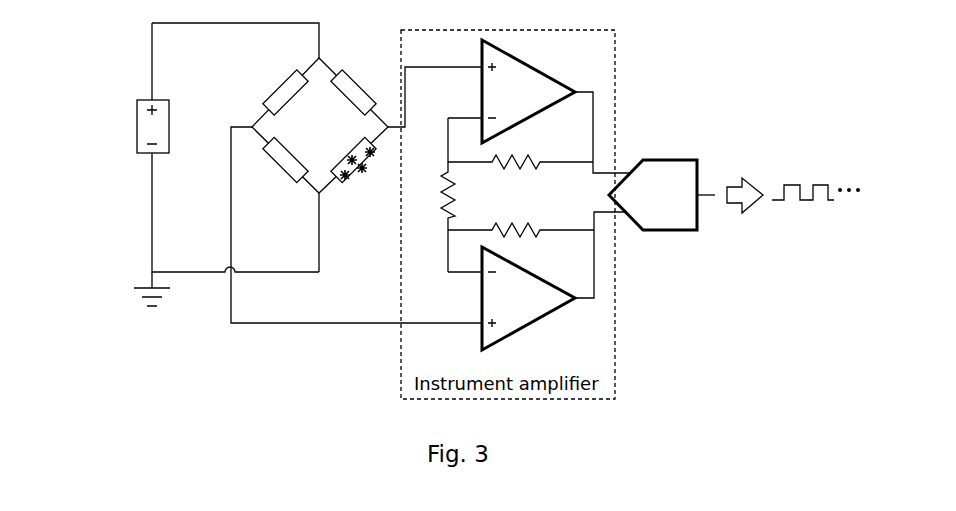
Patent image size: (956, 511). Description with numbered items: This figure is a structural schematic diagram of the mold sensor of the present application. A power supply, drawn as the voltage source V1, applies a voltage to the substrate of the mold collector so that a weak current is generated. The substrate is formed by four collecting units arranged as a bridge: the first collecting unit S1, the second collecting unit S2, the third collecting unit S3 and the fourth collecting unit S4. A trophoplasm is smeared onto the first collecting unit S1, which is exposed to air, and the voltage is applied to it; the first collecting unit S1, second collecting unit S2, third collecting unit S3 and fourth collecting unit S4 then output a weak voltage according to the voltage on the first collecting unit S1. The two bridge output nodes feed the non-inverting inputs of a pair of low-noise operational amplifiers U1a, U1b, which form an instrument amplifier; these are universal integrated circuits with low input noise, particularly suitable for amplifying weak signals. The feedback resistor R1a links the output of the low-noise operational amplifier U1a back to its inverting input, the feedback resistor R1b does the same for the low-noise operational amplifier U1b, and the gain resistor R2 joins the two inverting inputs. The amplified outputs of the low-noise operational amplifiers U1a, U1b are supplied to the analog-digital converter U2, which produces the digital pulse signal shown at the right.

The voltage source V1 is at (107, 122).
The first collecting unit S1 is at (364, 168).
The second collecting unit S2 is at (357, 82).
The third collecting unit S3 is at (275, 164).
The fourth collecting unit S4 is at (275, 82).
The low-noise operational amplifier U1a is at (658, 40).
The low-noise operational amplifier U1b is at (662, 343).
The feedback resistor R1a is at (520, 156).
The feedback resistor R1b is at (521, 233).
The gain resistor R2 is at (431, 217).
The analog-digital converter U2 is at (662, 181).